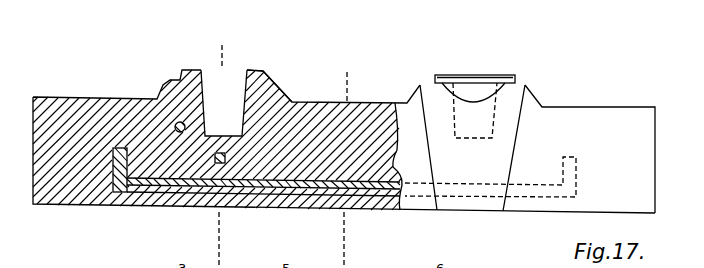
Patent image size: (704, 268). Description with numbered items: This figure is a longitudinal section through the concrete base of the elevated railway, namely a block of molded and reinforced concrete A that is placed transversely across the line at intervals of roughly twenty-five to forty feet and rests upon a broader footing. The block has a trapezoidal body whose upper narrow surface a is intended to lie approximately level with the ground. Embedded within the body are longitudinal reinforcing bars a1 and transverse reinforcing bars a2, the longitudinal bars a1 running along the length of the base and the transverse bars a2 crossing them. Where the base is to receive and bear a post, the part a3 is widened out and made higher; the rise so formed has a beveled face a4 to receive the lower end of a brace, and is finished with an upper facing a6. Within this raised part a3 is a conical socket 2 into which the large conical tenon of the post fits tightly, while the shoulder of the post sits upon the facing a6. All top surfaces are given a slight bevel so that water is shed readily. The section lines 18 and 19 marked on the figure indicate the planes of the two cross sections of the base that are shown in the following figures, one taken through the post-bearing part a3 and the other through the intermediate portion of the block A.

The concrete block A is at (344, 141).
The upper narrow surface a is at (594, 107).
The conical socket 2 is at (224, 103).
The upper facing a6 is at (248, 70).
The beveled face a4 is at (287, 95).
The post-bearing part a3 is at (490, 147).
The longitudinal reinforcing bar a1 is at (173, 193).
The transverse reinforcing bar a2 is at (182, 132).
The section line 19- 19 is at (225, 143).
The section line 18- 18 is at (349, 157).